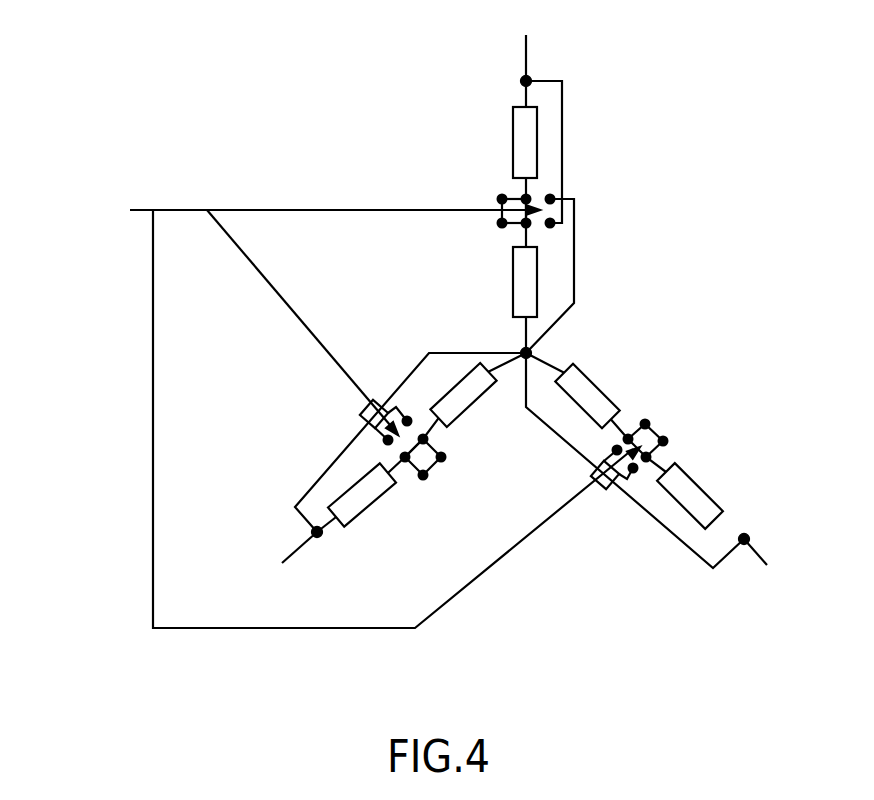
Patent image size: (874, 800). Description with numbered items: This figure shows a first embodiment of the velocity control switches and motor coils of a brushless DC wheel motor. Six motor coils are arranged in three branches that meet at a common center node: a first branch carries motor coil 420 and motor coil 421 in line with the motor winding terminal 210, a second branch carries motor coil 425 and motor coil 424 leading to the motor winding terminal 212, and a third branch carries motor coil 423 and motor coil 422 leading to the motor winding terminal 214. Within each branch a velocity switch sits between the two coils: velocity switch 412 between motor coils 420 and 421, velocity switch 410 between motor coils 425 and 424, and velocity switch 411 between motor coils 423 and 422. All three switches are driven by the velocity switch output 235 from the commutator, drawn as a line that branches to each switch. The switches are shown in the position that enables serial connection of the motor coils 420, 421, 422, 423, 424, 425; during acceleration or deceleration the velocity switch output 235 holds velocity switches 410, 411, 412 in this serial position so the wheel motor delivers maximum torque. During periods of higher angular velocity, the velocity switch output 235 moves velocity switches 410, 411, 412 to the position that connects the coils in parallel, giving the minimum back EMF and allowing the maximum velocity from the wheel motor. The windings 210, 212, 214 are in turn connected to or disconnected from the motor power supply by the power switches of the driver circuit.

The motor winding 210 is at (526, 44).
The motor coil 420 is at (513, 158).
The velocity switch 412 is at (498, 197).
The motor coil 421 is at (513, 305).
The velocity switch output 235 is at (185, 190).
The velocity switch 410 is at (428, 477).
The motor coil 425 is at (472, 408).
The motor coil 424 is at (372, 497).
The motor winding 212 is at (283, 565).
The motor coil 423 is at (610, 402).
The velocity switch 411 is at (653, 427).
The motor coil 422 is at (737, 489).
The motor winding 214 is at (768, 565).